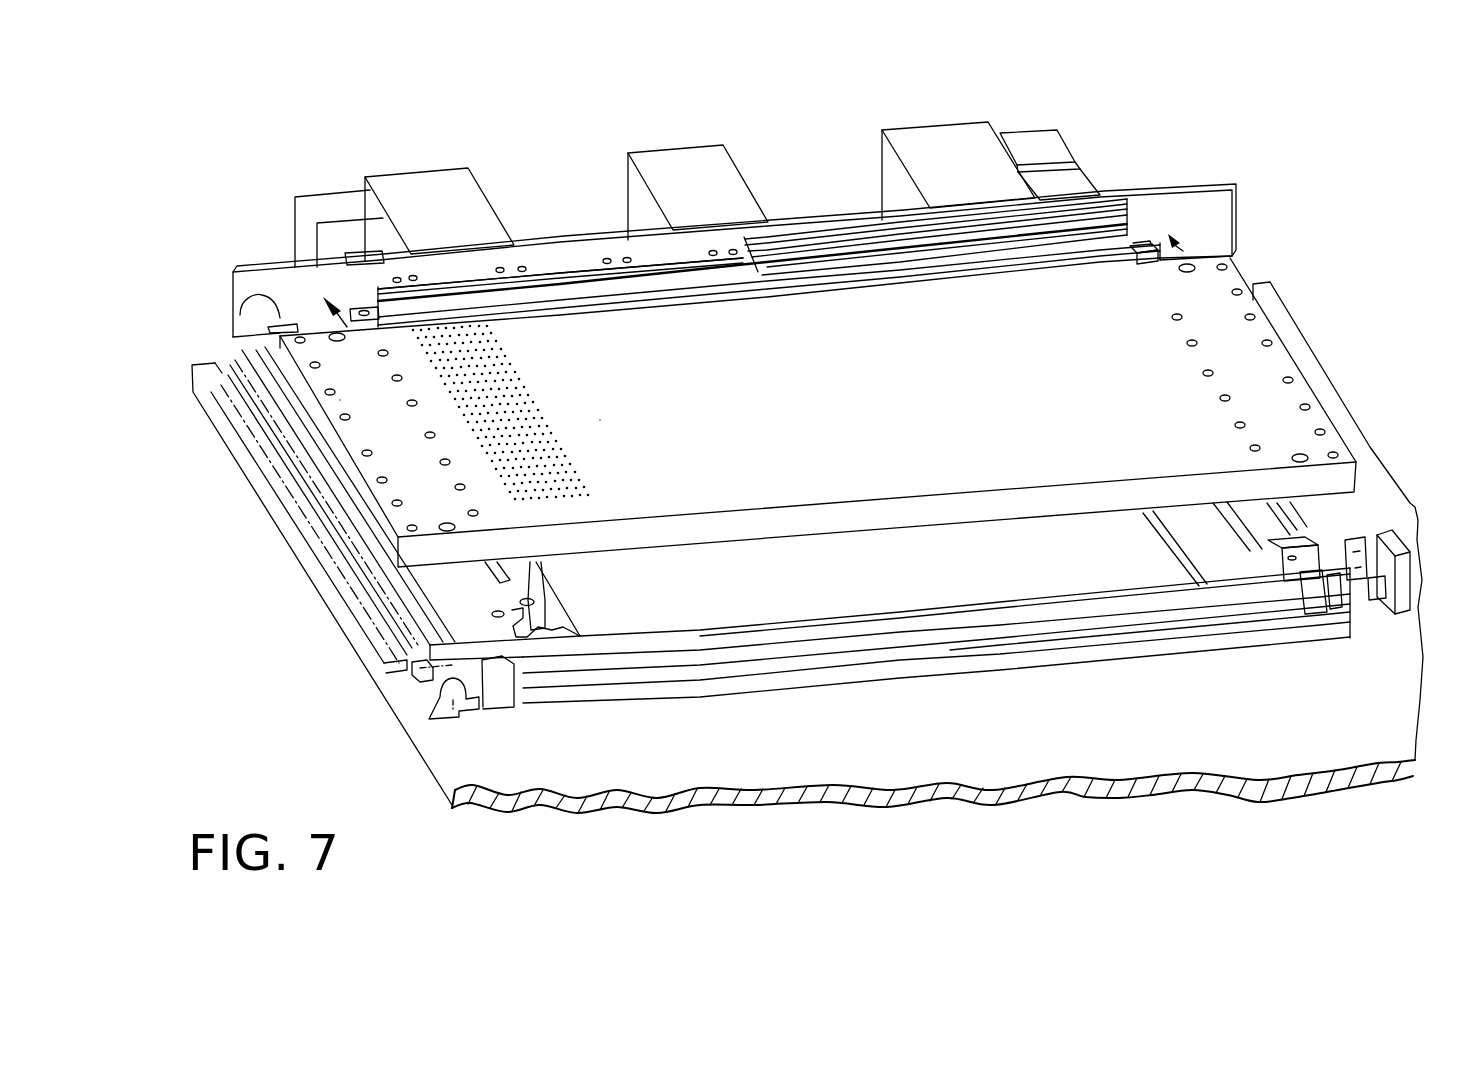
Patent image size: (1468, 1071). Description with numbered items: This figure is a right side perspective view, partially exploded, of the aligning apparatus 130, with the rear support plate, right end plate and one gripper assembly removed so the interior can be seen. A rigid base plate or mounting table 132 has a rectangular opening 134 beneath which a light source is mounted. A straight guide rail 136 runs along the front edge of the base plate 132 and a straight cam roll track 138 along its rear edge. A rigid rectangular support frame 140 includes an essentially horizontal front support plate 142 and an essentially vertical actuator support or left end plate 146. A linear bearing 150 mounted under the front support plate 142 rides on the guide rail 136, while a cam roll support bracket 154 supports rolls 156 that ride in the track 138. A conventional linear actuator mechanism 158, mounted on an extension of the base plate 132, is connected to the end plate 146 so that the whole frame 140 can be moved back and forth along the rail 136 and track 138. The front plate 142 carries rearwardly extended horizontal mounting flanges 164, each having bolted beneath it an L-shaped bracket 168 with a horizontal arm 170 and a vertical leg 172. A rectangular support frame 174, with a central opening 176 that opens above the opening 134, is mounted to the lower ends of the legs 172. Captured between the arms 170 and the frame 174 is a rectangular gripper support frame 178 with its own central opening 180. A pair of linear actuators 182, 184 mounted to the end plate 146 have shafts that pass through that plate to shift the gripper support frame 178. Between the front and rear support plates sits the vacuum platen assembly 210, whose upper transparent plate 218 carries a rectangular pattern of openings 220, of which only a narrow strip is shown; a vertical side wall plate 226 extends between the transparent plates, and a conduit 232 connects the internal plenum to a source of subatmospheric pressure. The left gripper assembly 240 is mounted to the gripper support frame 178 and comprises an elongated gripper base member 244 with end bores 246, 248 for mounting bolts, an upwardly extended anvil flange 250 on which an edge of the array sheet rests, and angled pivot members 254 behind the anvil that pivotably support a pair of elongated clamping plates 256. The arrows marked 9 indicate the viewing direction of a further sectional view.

The section line of FIG. 9 is at (746, 271).
The apparatus 130 is at (290, 565).
The base plate 132 is at (222, 376).
The rectangular opening 134 is at (1172, 556).
The guide rail 136 is at (456, 708).
The cam roll track 138 is at (1350, 507).
The support frame 140 is at (425, 647).
The front support plate 142 is at (462, 601).
The actuator support or left end plate 146 is at (248, 274).
The linear bearing 150 is at (427, 673).
The cam roll support bracket 154 is at (1410, 587).
The rolls 156 is at (1373, 600).
The linear actuator mechanism 158 is at (663, 163).
The mounting flanges 164 is at (530, 586).
The L-shaped bracket 168 is at (578, 632).
The horizontal arm 170 is at (535, 622).
The vertical leg 172 is at (1360, 653).
The support frame 174 is at (707, 688).
The central opening 176 is at (1260, 574).
The gripper support frame 178 is at (830, 650).
The central opening 180 is at (1247, 522).
The linear actuator 182 is at (423, 168).
The linear actuator 184 is at (942, 131).
The vacuum platen assembly 210 is at (358, 476).
The upper transparent plate 218 is at (404, 437).
The pattern of openings 220 is at (526, 374).
The side wall plate 226 is at (831, 522).
The conduit 232 is at (230, 310).
The left gripper assembly 240 is at (725, 253).
The gripper base member 244 is at (1134, 258).
The bore 246 is at (355, 309).
The bore 248 is at (1146, 238).
The anvil flange 250 is at (653, 293).
The pivot members 254 is at (1009, 250).
The clamping plates 256 is at (581, 282).